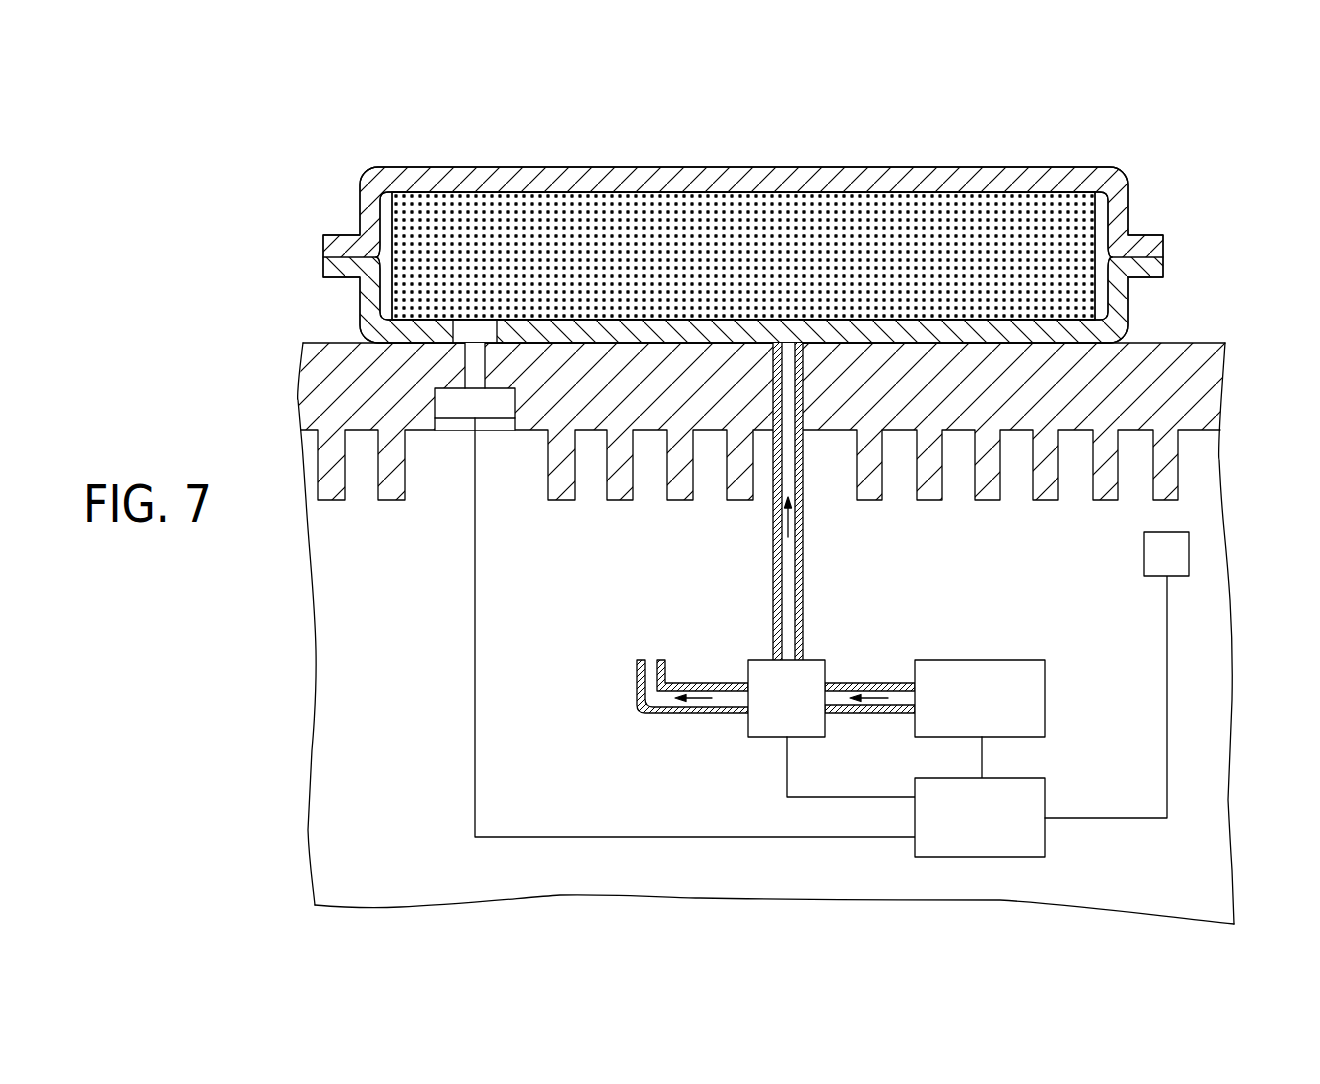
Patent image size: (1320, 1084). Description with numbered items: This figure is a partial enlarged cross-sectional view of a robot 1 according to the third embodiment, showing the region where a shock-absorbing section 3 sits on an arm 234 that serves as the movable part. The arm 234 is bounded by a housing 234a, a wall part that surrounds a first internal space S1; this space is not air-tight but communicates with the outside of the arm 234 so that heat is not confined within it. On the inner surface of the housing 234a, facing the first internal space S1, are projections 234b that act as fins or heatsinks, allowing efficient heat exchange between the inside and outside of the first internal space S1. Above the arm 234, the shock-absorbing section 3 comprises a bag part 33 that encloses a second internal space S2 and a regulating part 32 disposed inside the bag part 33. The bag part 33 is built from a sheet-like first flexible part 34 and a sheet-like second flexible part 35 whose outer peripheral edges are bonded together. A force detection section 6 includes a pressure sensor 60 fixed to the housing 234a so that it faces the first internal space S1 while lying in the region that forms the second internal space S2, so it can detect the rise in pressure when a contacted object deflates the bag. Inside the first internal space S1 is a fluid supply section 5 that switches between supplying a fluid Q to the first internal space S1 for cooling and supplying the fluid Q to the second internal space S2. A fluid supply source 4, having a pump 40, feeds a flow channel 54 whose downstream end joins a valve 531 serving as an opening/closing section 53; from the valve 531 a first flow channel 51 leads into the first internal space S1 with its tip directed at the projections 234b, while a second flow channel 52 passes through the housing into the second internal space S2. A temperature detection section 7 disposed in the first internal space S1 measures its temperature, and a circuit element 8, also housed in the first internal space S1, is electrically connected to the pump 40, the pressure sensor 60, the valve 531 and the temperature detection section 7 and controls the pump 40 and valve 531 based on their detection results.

The robot 1 is at (1159, 118).
The shock-absorbing section 3 is at (743, 200).
The regulating part 32 is at (625, 230).
The bag part 33 is at (743, 200).
The first flexible part 34 is at (462, 180).
The second flexible part 35 is at (537, 332).
The second internal space S2 is at (785, 215).
The arm 234 is at (764, 416).
The housing 234a is at (713, 410).
The projections 234b is at (620, 497).
The pressure sensor 60 is at (488, 419).
The force detection section 6 is at (487, 402).
The second flow channel 52 is at (803, 565).
The temperature detection section 7 is at (1189, 552).
The first internal space S1 is at (1212, 663).
The pump 40 is at (999, 668).
The fluid supply source 4 is at (1010, 660).
The first flow channel 51 is at (705, 683).
The fluid Q is at (870, 683).
The fluid supply section 5 is at (776, 589).
The valve 531 is at (776, 747).
The opening/closing section 53 is at (757, 737).
The flow channel 54 is at (865, 713).
The circuit element 8 is at (1012, 857).